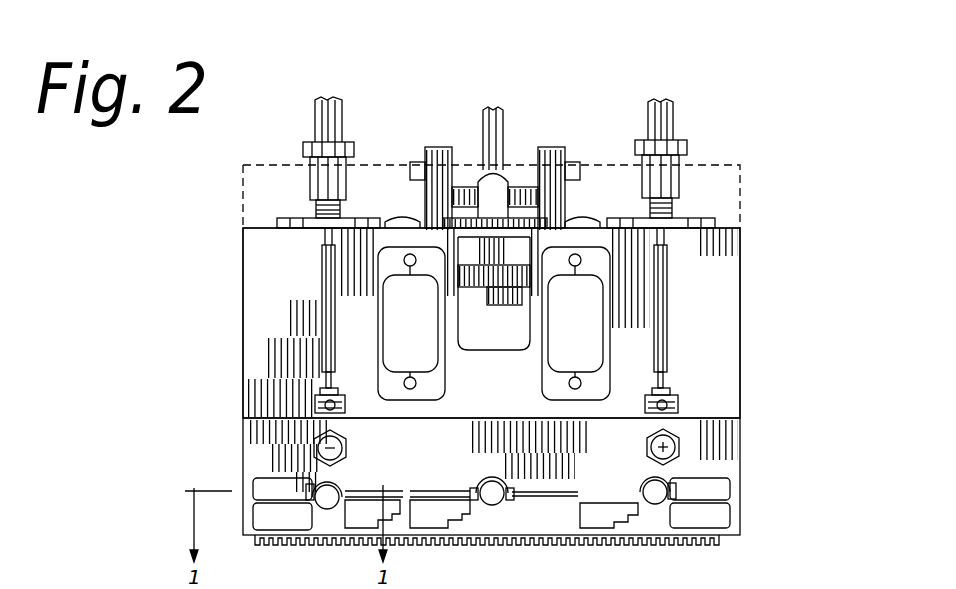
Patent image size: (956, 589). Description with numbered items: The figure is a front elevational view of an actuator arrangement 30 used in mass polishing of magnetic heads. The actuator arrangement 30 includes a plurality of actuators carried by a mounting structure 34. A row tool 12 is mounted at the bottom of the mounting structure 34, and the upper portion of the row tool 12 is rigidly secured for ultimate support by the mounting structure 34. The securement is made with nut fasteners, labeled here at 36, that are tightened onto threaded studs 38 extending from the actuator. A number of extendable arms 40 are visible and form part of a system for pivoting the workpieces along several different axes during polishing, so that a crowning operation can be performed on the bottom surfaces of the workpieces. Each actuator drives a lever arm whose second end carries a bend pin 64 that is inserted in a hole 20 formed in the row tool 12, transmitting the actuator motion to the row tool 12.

The row tool 12 is at (745, 455).
The actuator arrangement 30 is at (641, 76).
The mounting structure 34 is at (258, 325).
The extendable arms 40 is at (323, 300).
The hex nut 36 is at (646, 440).
The threaded studs 38 is at (645, 452).
The hole 20 is at (580, 482).
The bend pin 64 is at (485, 488).